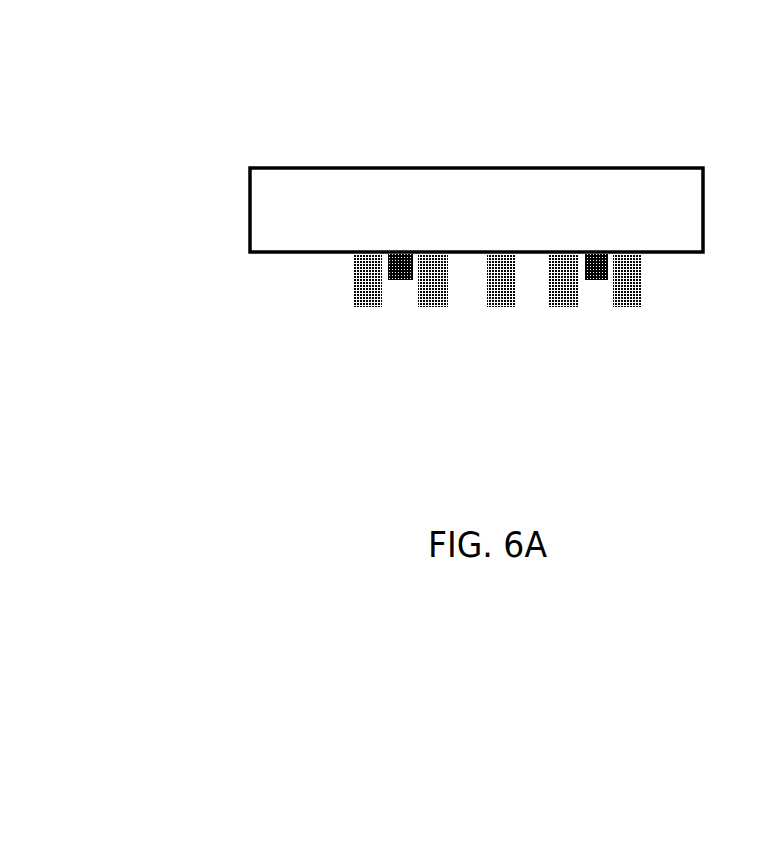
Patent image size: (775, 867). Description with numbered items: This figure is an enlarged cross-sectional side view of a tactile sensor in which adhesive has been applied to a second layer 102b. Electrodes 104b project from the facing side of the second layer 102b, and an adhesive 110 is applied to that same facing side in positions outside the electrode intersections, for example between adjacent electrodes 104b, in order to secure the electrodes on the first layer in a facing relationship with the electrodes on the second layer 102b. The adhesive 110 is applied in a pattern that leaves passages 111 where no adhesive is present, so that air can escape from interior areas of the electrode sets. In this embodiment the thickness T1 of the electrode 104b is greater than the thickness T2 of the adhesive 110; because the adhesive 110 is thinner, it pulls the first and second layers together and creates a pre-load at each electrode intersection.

The second layer 102b is at (275, 147).
The electrode 104b is at (368, 285).
The adhesive 110 is at (402, 270).
The passages 111 is at (384, 267).
The thickness of the electrode T1 is at (242, 255).
The thickness of the adhesive T2 is at (177, 218).